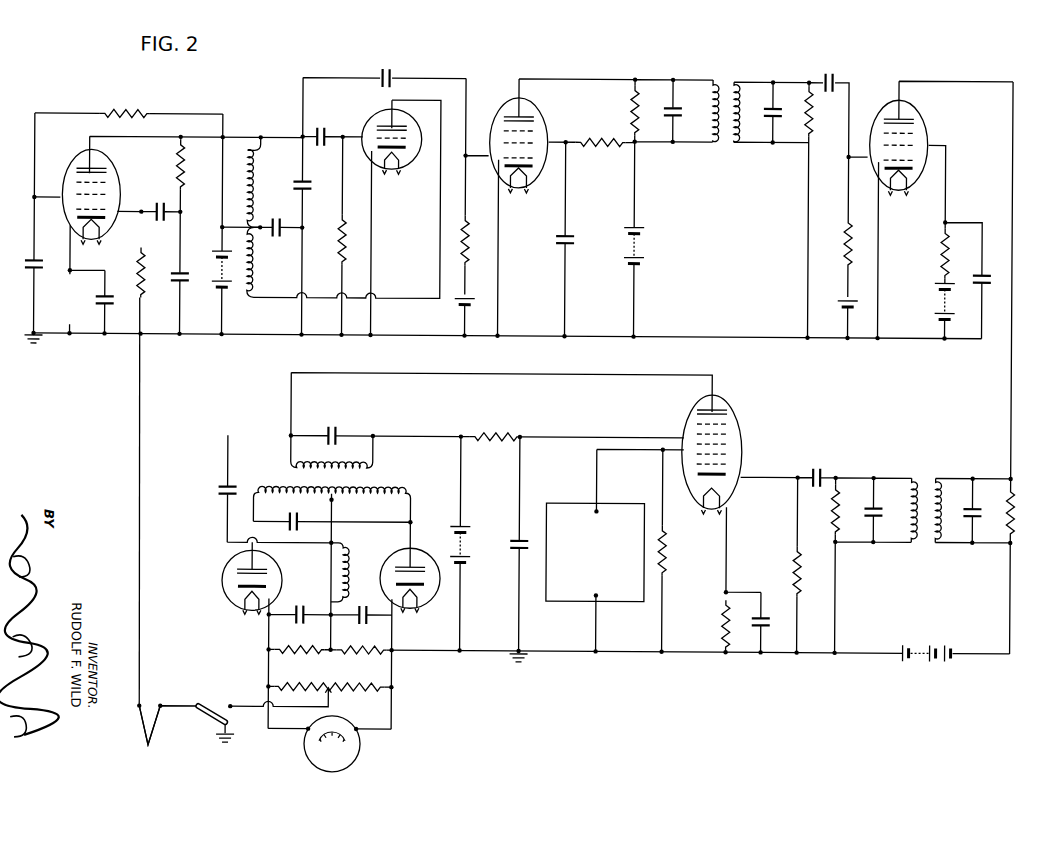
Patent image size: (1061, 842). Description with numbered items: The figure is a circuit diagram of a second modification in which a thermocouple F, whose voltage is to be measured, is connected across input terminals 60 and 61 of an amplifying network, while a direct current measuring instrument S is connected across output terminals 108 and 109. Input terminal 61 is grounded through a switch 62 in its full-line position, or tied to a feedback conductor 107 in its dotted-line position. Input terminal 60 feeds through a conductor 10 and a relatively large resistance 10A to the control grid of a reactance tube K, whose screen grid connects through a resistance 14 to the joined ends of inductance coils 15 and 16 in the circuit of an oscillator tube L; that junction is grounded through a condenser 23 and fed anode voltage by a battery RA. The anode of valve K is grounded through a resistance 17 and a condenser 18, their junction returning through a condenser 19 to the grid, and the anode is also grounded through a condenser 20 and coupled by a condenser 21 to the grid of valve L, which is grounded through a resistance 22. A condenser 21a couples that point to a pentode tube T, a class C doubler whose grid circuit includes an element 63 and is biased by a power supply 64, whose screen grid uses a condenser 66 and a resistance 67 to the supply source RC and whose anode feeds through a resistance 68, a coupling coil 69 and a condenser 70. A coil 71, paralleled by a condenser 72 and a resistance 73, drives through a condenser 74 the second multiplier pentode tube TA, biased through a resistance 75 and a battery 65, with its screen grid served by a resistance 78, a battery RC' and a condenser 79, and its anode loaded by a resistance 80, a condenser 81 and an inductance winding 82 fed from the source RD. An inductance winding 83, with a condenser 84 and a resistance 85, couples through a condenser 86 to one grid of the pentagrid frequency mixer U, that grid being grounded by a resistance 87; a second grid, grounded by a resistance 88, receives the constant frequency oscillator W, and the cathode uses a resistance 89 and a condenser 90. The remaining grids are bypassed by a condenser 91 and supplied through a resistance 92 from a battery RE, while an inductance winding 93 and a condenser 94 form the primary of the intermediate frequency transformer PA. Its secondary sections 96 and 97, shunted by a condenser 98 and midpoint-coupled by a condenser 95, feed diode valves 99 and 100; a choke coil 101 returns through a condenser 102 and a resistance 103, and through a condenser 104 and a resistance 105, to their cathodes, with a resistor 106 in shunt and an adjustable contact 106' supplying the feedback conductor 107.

The resistance 14 is at (137, 111).
The reactance tube K is at (119, 183).
The resistance 17 is at (175, 166).
The condenser 19 is at (156, 203).
The resistance 10A is at (142, 253).
The condenser 18 is at (174, 283).
The battery RA is at (215, 266).
The inductance coil 15 is at (254, 177).
The condenser 23 is at (282, 220).
The inductance coil 16 is at (253, 274).
The condenser 20 is at (308, 180).
The condenser 21 is at (316, 130).
The resistance 22 is at (339, 241).
The condenser 21a is at (383, 73).
The oscillator tube L is at (415, 119).
The resistor 63 is at (477, 241).
The battery or power supply 64 is at (454, 306).
The pentode tube T is at (545, 121).
The condenser 66 is at (570, 239).
The resistance 67 is at (596, 149).
The resistance 68 is at (628, 114).
The source of supply voltage RC is at (650, 248).
The condenser 70 is at (669, 103).
The coupling coil 69 is at (708, 103).
The coil 71 is at (744, 101).
The condenser 72 is at (768, 120).
The resistance 73 is at (816, 119).
The condenser 74 is at (835, 66).
The pentode tube TA is at (926, 123).
The resistance 75 is at (844, 238).
The battery 65 is at (837, 309).
The resistance 78 is at (941, 259).
The battery RC' is at (930, 306).
The condenser 79 is at (987, 274).
The condenser 95 is at (218, 490).
The inductance winding 93 is at (322, 464).
The condenser 94 is at (334, 430).
The resistance 92 is at (485, 430).
The intermediate frequency transformer PA is at (393, 480).
The secondary winding section 97 is at (286, 504).
The condenser 98 is at (305, 518).
The secondary winding section 96 is at (368, 506).
The diode valve 99 is at (414, 552).
The battery RE is at (473, 543).
The condenser 91 is at (514, 560).
The conductor 10 is at (142, 585).
The diode valve 100 is at (228, 572).
The choke coil 101 is at (342, 564).
The condenser 104 is at (302, 604).
The resistance 105 is at (295, 649).
The condenser 102 is at (354, 627).
The resistor 106 is at (329, 674).
The resistance 103 is at (353, 658).
The contact 106' is at (359, 709).
The feedback conductor 107 is at (278, 712).
The output terminal 109 is at (306, 732).
The output terminal 108 is at (362, 733).
The direct current measuring instrument S is at (360, 762).
The input terminal 60 is at (138, 706).
The input terminal 61 is at (155, 706).
The switch 62 is at (220, 706).
The thermocouple F is at (155, 736).
The constant frequency oscillator W is at (580, 602).
The frequency mixer U is at (744, 423).
The resistance 88 is at (671, 552).
The resistance 87 is at (790, 574).
The resistance 89 is at (720, 620).
The condenser 90 is at (760, 624).
The condenser 86 is at (823, 467).
The resistance 85 is at (831, 508).
The condenser 84 is at (870, 508).
The inductance winding 83 is at (907, 522).
The inductance winding 82 is at (940, 506).
The condenser 81 is at (976, 520).
The resistance 80 is at (1017, 505).
The source of unidirectional current RD is at (932, 641).